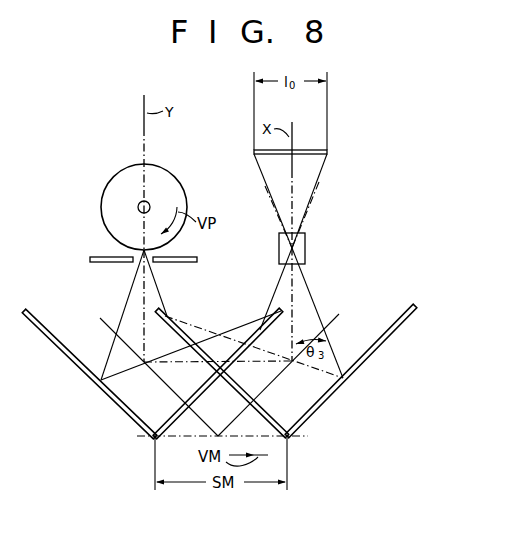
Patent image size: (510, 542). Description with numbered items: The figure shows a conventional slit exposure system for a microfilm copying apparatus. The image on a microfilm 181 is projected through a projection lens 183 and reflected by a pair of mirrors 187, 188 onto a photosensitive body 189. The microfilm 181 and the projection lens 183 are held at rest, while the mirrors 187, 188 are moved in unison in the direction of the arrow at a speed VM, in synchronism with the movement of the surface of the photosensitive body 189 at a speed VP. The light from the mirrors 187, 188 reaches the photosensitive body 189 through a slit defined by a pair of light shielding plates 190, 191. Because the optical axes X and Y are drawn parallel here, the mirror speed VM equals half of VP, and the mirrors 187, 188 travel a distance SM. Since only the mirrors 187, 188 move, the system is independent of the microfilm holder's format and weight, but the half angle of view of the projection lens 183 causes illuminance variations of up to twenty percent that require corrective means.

The microfilm 181 is at (327, 152).
The projection lens 183 is at (305, 248).
The mirror 187 is at (325, 398).
The mirror 188 is at (262, 412).
The photosensitive body 189 is at (168, 178).
The light shielding plate 190 is at (175, 263).
The light shielding plate 191 is at (111, 263).